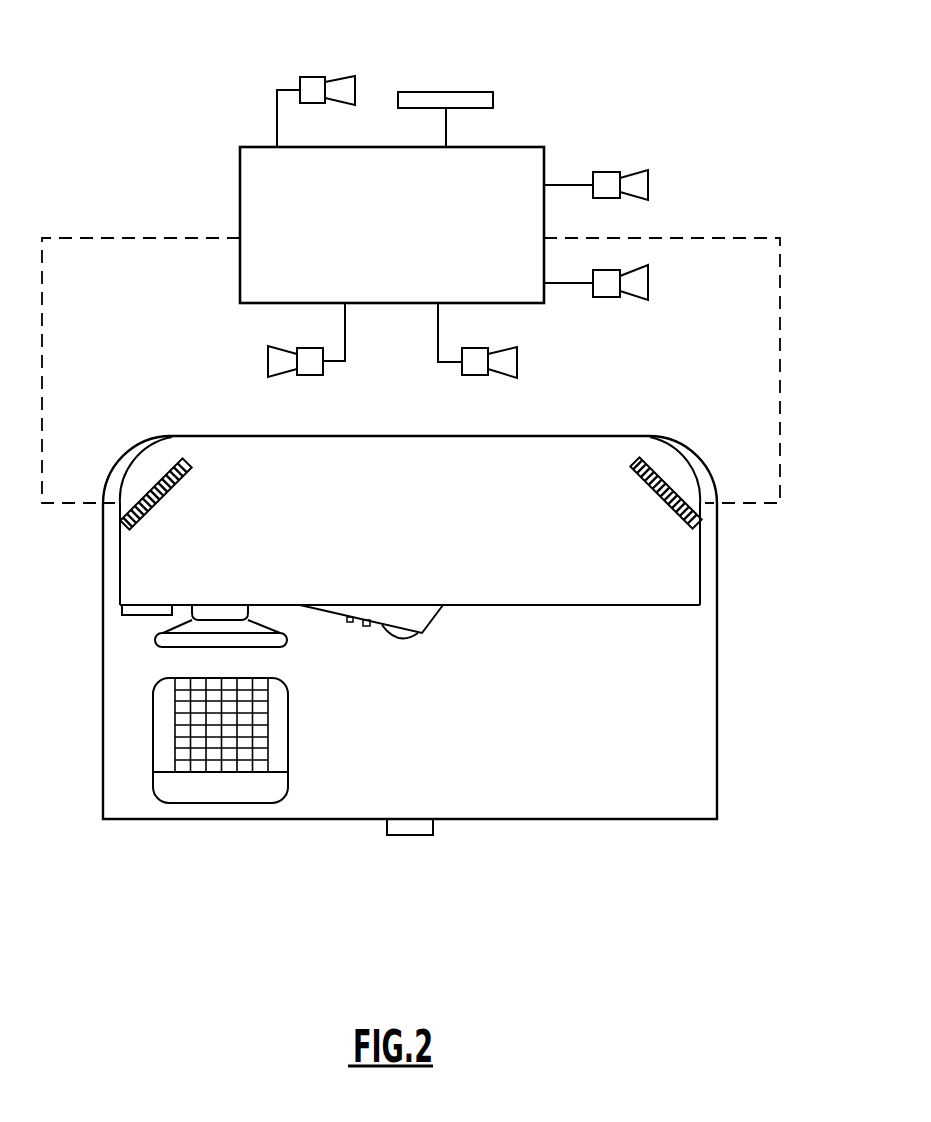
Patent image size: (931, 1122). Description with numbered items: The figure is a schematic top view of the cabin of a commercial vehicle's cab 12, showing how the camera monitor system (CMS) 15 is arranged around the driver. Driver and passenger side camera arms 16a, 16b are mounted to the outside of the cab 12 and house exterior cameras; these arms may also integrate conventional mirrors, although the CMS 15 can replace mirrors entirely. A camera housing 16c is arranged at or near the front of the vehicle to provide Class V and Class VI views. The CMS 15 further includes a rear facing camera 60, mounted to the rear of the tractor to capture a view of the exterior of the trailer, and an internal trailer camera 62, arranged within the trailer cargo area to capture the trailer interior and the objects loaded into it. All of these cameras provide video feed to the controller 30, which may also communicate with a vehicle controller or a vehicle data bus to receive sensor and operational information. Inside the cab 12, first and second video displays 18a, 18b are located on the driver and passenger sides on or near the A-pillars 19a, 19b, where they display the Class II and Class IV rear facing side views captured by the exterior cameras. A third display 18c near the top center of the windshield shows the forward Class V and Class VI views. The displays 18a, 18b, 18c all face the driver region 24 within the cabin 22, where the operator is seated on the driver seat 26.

The vehicle cab 12 is at (528, 407).
The camera monitor system 15 is at (660, 64).
The driver side camera arm 16a is at (310, 377).
The passenger side camera arm 16b is at (475, 376).
The camera housing 16c is at (313, 77).
The first video display 18a is at (149, 470).
The second video display 18b is at (671, 469).
The third display 18c is at (471, 92).
The A-pillar 19a is at (118, 474).
The A-pillar 19b is at (702, 475).
The cabin 22 is at (633, 765).
The driver region 24 is at (364, 632).
The driver seat 26 is at (275, 728).
The controller 30 is at (547, 158).
The rear facing camera 60 is at (608, 172).
The internal trailer camera 62 is at (607, 297).